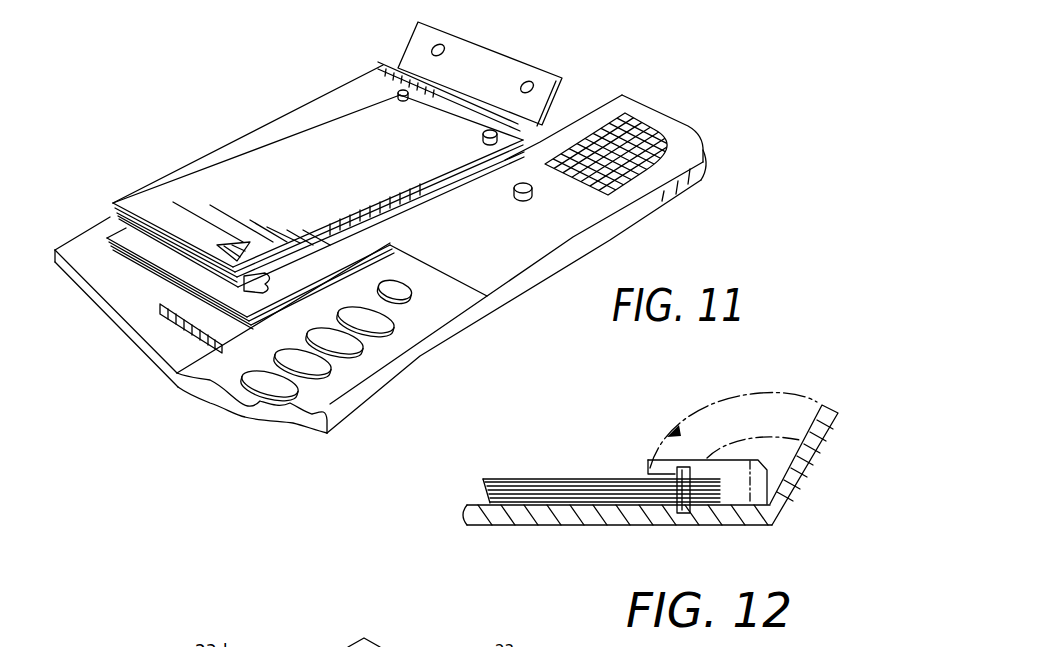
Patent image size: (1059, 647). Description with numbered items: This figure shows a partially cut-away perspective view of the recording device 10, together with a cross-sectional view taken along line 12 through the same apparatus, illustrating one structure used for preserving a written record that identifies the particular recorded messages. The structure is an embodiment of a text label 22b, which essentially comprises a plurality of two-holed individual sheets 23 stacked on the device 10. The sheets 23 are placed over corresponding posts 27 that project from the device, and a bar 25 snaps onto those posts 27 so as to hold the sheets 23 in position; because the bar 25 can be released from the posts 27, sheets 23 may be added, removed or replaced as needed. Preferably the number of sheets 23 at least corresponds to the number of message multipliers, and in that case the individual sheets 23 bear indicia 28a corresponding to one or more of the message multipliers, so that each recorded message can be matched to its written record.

In FIG. 11, the base board 10 is at (716, 127).
In FIG. 12, the base board 10 is at (617, 515).
In FIG. 11, the section line 12— 12 is at (490, 10).
In FIG. 11, the text label 22b is at (249, 126).
In FIG. 12, the text label 22b is at (589, 464).
In FIG. 11, the individual sheets 23 is at (166, 212).
In FIG. 12, the individual sheets 23 is at (515, 480).
In FIG. 11, the bar 25 is at (536, 73).
In FIG. 12, the bar 25 is at (812, 446).
In FIG. 11, the posts 27 is at (400, 90).
In FIG. 12, the posts 27 is at (691, 467).
In FIG. 11, the indicia 28a is at (242, 243).